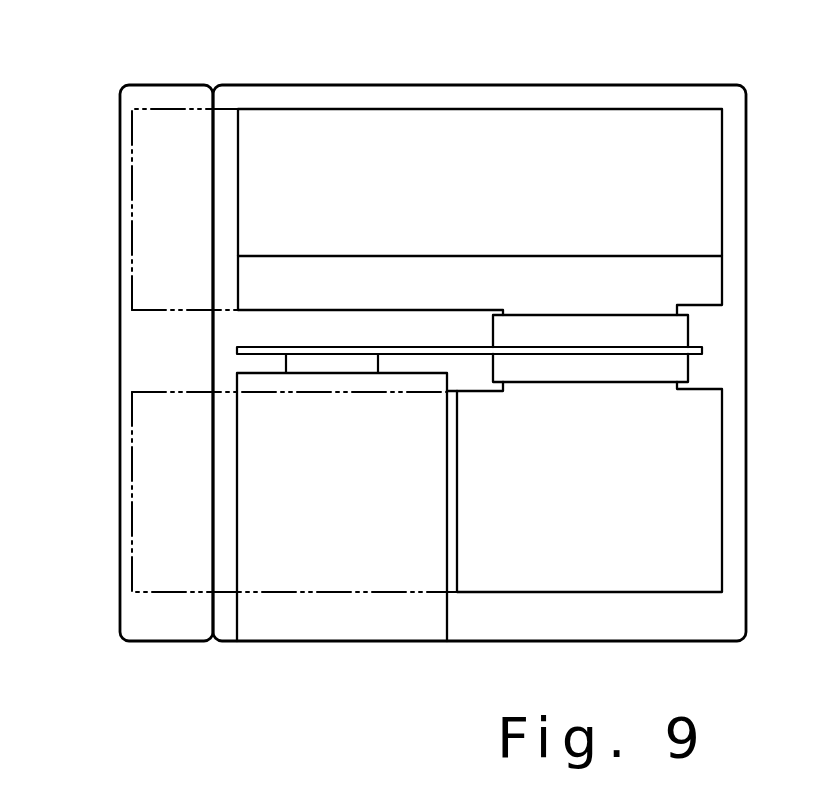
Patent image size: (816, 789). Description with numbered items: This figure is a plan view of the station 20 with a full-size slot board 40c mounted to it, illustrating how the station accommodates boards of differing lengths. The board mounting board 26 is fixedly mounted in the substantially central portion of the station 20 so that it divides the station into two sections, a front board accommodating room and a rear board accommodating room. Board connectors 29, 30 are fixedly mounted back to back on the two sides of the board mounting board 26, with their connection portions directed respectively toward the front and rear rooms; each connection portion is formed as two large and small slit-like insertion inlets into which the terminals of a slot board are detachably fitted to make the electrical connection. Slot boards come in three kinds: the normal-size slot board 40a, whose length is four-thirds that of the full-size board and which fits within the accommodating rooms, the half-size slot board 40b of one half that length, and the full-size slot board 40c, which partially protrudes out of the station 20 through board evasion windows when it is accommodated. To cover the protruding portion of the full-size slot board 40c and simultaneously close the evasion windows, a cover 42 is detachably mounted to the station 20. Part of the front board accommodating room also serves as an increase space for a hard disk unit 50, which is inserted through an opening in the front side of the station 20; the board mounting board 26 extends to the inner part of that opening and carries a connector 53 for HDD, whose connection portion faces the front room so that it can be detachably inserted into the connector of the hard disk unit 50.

The station 20 is at (684, 71).
The board mounting board 26 is at (409, 347).
The board connector 29 is at (585, 372).
The board connector 30 is at (587, 330).
The normal-size slot board 40a is at (591, 115).
The half-size slot board 40b is at (588, 582).
The full-size slot board 40c is at (132, 205).
The cover 42 is at (132, 347).
The hard disk unit 50 is at (350, 627).
The connector for HDD 53 is at (342, 365).